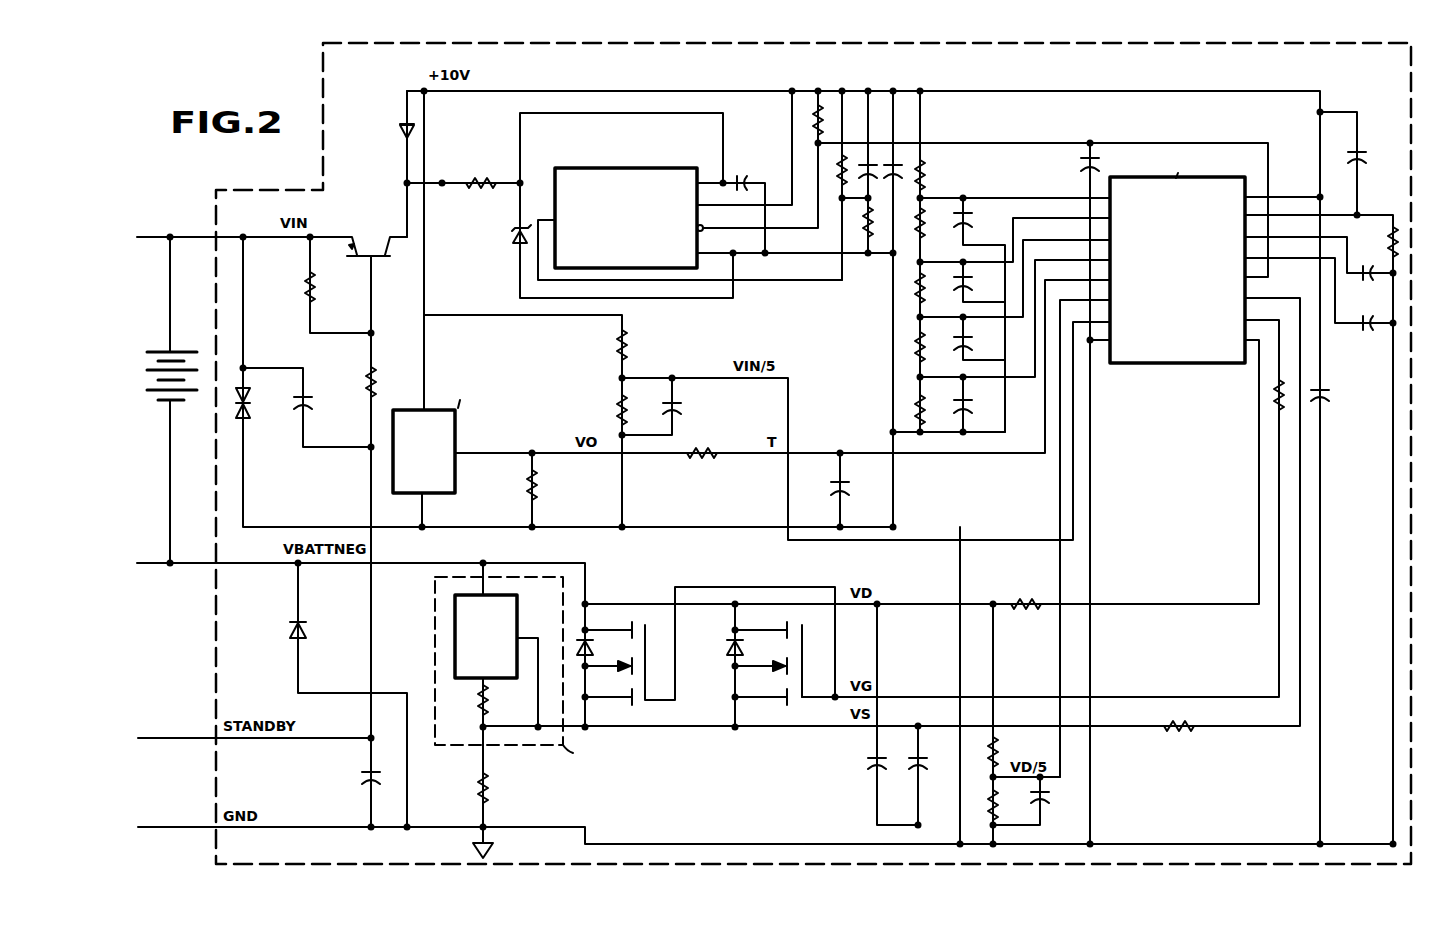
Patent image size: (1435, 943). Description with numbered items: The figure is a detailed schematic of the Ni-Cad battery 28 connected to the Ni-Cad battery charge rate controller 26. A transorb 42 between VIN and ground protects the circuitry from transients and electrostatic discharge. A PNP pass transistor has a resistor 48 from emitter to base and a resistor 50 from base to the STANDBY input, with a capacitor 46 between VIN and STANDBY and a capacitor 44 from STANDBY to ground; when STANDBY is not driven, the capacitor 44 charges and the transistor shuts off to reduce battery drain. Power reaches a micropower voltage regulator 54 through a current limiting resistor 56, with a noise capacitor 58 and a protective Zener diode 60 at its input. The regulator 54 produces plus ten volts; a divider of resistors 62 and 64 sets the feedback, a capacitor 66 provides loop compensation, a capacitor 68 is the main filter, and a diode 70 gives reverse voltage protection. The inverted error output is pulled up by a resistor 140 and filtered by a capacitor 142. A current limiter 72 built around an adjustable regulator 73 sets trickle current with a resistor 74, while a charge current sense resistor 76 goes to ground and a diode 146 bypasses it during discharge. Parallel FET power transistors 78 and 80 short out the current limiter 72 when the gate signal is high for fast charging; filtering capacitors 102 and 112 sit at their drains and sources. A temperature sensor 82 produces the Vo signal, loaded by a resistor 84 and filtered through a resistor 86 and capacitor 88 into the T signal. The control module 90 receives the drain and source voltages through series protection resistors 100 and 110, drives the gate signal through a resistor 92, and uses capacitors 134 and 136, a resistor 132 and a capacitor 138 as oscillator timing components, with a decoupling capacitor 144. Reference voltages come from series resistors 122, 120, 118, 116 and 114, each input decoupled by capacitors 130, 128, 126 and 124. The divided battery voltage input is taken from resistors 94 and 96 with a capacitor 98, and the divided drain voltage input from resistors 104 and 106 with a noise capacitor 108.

The Ni-Cad battery charge rate controller 26 is at (326, 864).
The Ni-Cad battery 28 is at (158, 400).
The transorb 42 is at (250, 412).
The capacitor 44 is at (374, 770).
The capacitor 46 is at (312, 398).
The resistor 48 is at (304, 276).
The resistor 50 is at (376, 374).
The micropower voltage regulator 54 is at (672, 168).
The resistor 56 is at (470, 178).
The capacitor 58 is at (736, 176).
The Zener diode 60 is at (512, 238).
The resistor 62 is at (845, 153).
The resistor 64 is at (868, 228).
The capacitor 66 is at (877, 158).
The capacitor 68 is at (895, 163).
The diode 70 is at (400, 130).
The current limiter 72 is at (435, 629).
The low power adjustable voltage regulator 73 is at (517, 612).
The resistor 74 is at (490, 710).
The charge current sense resistor 76 is at (491, 798).
The FET power transistor 78 is at (595, 630).
The FET power transistor 80 is at (747, 626).
The temperature sensor 82 is at (456, 482).
The resistor 84 is at (539, 482).
The resistor 86 is at (706, 460).
The capacitor 88 is at (844, 484).
The control module 90 is at (1160, 363).
The resistor 92 is at (1272, 396).
The resistor 94 is at (625, 342).
The resistor 96 is at (617, 398).
The capacitor 98 is at (682, 406).
The series protection resistor 100 is at (1023, 596).
The filtering capacitor 102 is at (867, 758).
The resistor 104 is at (1000, 751).
The resistor 106 is at (1005, 821).
The noise capacitor 108 is at (1045, 792).
The series protection resistor 110 is at (1179, 732).
The filtering capacitor 112 is at (918, 774).
The resistor 114 is at (926, 405).
The resistor 116 is at (926, 343).
The resistor 118 is at (926, 283).
The resistor 120 is at (926, 226).
The resistor 122 is at (928, 180).
The capacitor 124 is at (988, 405).
The capacitor 126 is at (985, 340).
The capacitor 128 is at (980, 275).
The capacitor 130 is at (980, 212).
The resistor 132 is at (1392, 226).
The capacitor 134 is at (1362, 278).
The capacitor 136 is at (1362, 330).
The capacitor 138 is at (1365, 150).
The resistor 140 is at (822, 104).
The noise filtering capacitor 142 is at (1084, 156).
The power supply decoupling capacitor 144 is at (1328, 387).
The diode 146 is at (306, 638).